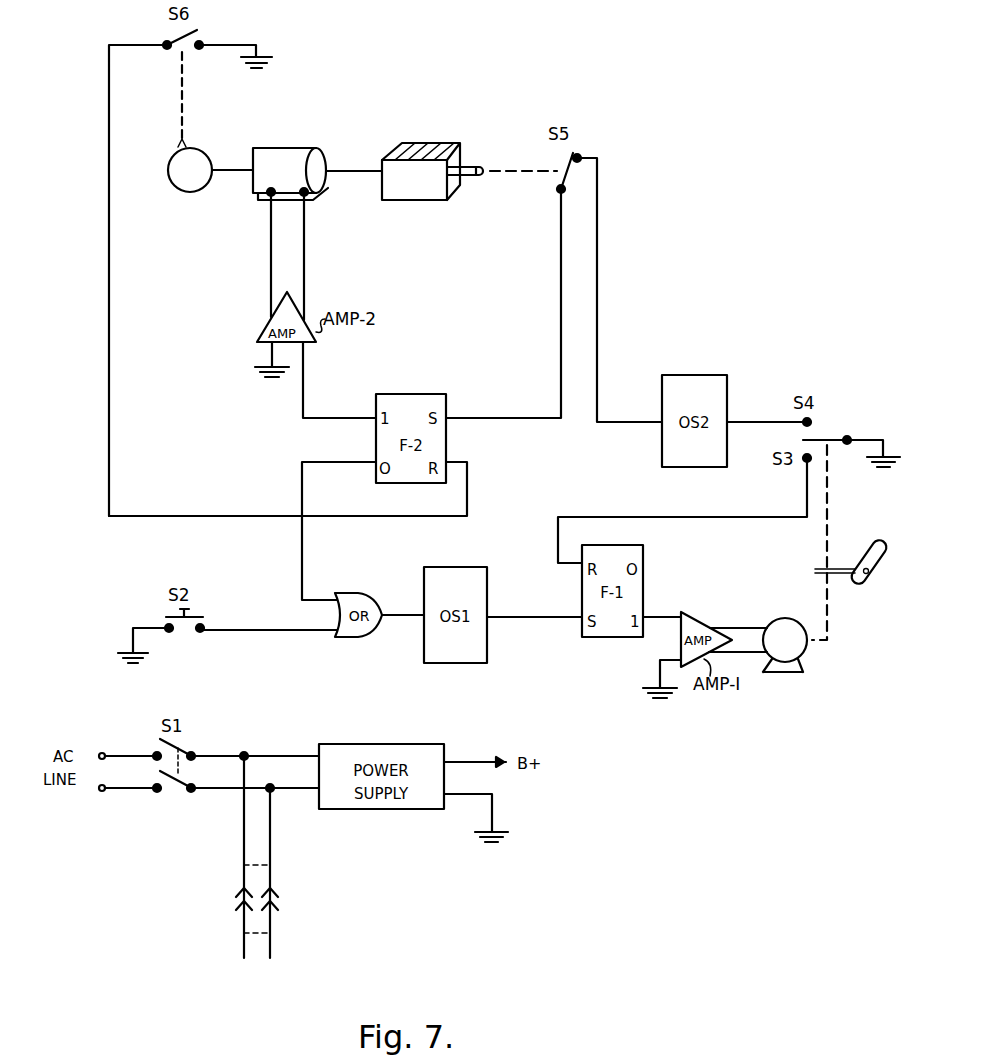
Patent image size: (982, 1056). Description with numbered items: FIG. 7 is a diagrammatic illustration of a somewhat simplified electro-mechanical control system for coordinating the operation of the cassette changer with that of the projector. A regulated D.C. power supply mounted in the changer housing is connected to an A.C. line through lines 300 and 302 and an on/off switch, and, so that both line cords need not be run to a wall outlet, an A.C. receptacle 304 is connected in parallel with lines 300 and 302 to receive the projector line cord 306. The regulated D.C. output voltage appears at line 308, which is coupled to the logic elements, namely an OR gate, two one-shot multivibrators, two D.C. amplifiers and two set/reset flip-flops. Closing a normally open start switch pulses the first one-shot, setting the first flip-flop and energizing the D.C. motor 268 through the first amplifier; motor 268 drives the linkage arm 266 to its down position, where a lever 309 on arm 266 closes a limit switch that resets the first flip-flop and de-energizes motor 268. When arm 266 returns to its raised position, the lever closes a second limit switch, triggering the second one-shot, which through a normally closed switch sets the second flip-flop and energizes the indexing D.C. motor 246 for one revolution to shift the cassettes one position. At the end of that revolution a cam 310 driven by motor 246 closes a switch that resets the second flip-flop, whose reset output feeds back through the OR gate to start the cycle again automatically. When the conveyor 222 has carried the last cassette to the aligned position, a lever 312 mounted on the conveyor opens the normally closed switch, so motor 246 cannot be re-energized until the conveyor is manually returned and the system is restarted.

The cam 310 is at (182, 191).
The D.C. motor 246 is at (262, 200).
The conveyor 222 is at (406, 197).
The lever 312 is at (476, 164).
The lever 309 is at (845, 567).
The linkage arm 266 is at (877, 567).
The D.C. motor 268 is at (793, 672).
The line 300 is at (296, 756).
The line 302 is at (296, 795).
The A.C. receptacle 304 is at (292, 905).
The projector line cord 306 is at (290, 946).
The line 308 is at (493, 760).